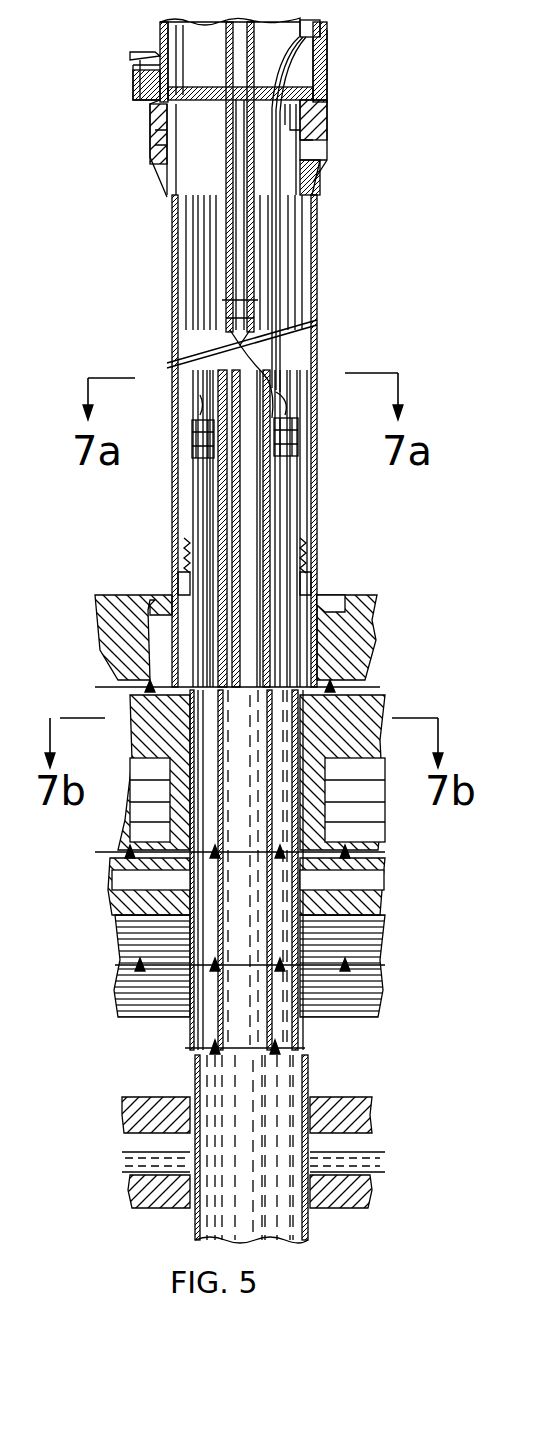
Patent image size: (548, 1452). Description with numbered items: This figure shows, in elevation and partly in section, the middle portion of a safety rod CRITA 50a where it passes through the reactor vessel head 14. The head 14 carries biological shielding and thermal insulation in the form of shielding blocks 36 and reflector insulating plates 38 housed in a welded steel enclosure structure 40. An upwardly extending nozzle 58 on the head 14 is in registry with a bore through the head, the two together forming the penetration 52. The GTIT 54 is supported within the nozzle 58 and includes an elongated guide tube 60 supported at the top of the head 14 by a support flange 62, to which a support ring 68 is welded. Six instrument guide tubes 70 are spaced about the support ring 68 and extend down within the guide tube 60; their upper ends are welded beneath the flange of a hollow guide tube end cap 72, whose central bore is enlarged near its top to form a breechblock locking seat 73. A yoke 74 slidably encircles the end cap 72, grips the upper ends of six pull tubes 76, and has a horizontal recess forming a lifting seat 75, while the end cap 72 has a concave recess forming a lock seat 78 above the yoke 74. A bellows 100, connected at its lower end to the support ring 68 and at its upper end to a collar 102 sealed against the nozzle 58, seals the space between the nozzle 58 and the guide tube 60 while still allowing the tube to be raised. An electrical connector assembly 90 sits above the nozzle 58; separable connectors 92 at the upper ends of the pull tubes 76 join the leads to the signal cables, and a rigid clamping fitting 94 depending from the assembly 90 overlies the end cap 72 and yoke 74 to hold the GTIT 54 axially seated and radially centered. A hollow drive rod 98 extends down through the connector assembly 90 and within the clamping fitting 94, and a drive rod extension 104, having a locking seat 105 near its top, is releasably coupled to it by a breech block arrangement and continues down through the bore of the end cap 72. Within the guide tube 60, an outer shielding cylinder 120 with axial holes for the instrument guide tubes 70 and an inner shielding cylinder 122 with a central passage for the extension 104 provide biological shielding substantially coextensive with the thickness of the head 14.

The reactor vessel head 14 is at (366, 630).
The shielding blocks 36 is at (378, 836).
The reflector insulating plates 38 is at (376, 924).
The welded steel enclosure structure 40 is at (364, 722).
The safety rod CRITA 50a is at (403, 250).
The penetration 52 is at (172, 212).
The GTIT 54 is at (322, 1080).
The nozzle 58 is at (318, 295).
The guide tube 60 is at (310, 1040).
The support flange 62 is at (312, 574).
The support ring 68 is at (180, 574).
The instrument guide tubes 70 is at (196, 532).
The guide tube end cap 72 is at (286, 476).
The breechblock locking seat 73 is at (280, 362).
The yoke 74 is at (292, 444).
The lifting seat 75 is at (292, 404).
The pull tubes 76 is at (290, 504).
The lock seat 78 is at (290, 392).
The electrical connector assembly 90 is at (322, 38).
The separable connectors 92 is at (196, 437).
The clamping fitting 94 is at (196, 256).
The drive rod 98 is at (226, 64).
The bellows 100 is at (314, 186).
The collar 102 is at (332, 136).
The drive rod extension 104 is at (256, 896).
The locking seat 105 is at (236, 325).
The outer shielding cylinder 120 is at (196, 728).
The inner shielding cylinder 122 is at (266, 726).